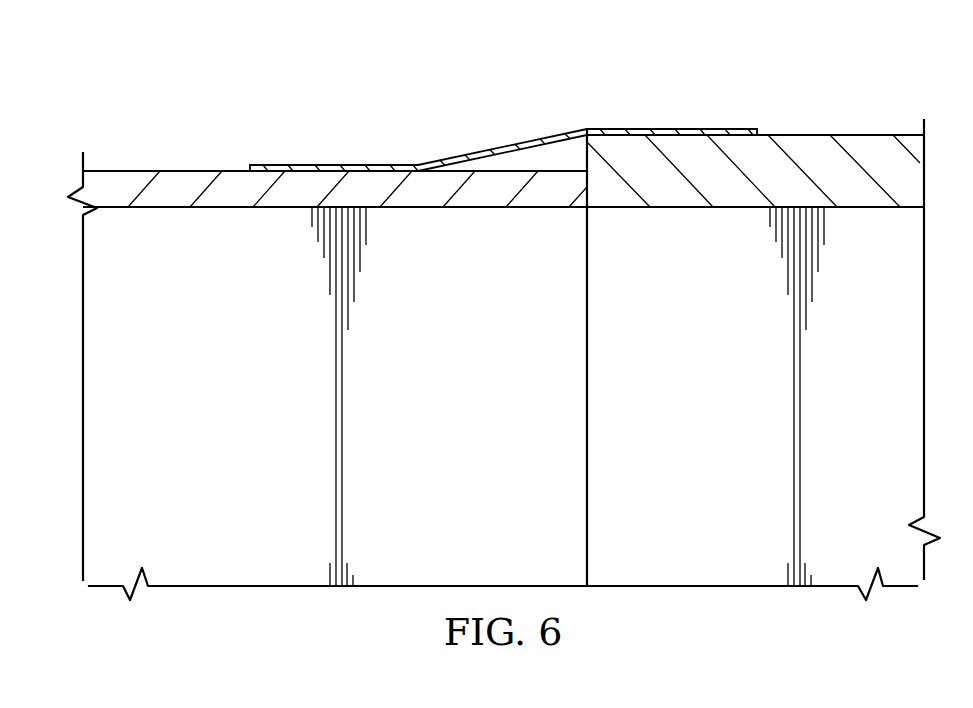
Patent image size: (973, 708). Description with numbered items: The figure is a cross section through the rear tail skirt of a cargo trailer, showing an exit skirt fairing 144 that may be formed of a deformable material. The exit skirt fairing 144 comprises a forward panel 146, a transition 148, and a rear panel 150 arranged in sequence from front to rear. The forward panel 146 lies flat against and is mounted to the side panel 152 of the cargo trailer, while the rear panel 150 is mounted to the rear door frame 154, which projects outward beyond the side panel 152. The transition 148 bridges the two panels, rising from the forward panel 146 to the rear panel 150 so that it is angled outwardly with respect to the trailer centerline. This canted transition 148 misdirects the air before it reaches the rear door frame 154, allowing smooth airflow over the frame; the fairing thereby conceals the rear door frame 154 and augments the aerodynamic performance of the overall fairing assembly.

The exit skirt fairing 144 is at (503, 101).
The forward panel 146 is at (303, 165).
The transition 148 is at (512, 147).
The rear panel 150 is at (670, 128).
The side panel 152 is at (183, 181).
The rear door frame 154 is at (868, 142).